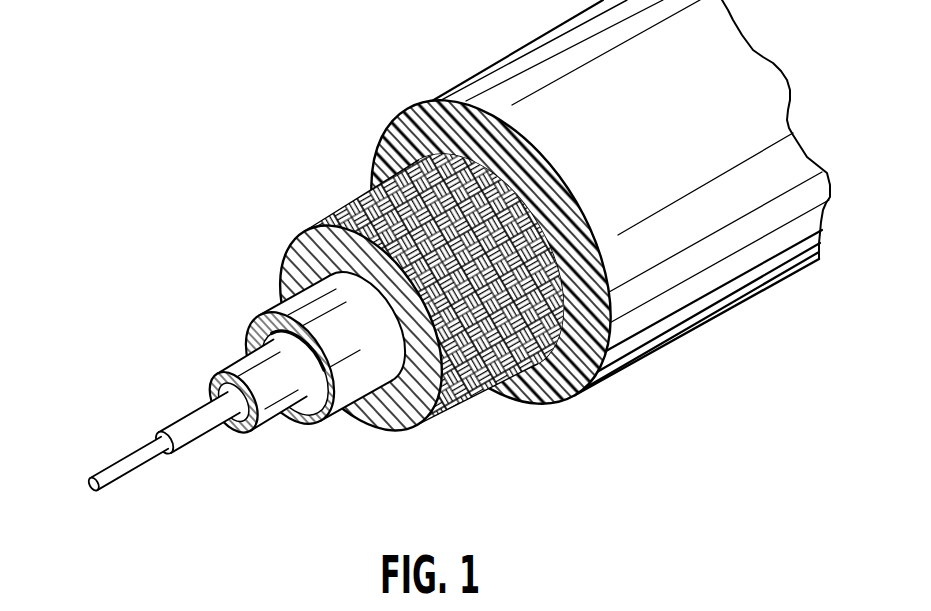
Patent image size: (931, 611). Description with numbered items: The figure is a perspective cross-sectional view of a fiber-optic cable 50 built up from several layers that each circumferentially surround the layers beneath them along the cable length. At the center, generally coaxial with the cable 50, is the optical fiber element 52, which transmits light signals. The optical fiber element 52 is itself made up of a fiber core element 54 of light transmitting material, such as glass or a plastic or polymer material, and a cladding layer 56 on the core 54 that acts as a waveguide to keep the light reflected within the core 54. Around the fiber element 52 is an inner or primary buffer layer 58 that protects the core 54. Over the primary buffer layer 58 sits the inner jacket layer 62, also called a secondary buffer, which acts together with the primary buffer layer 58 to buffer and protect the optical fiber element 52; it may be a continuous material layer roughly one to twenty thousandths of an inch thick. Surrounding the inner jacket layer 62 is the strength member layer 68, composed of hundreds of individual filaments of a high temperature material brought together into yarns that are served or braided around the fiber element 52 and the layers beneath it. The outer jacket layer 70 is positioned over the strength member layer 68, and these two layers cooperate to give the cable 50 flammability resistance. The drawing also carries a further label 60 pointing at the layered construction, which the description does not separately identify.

The fiber-optic cable 50 is at (438, 261).
The optical fiber element 52 is at (143, 424).
The fiber core element 54 is at (124, 458).
The cladding layer 56 is at (187, 415).
The primary buffer layer 58 is at (232, 362).
The dielectric layer 60 is at (315, 485).
The inner jacket layer 62 is at (271, 305).
The strength member layer 68 is at (348, 210).
The outer jacket layer 70 is at (450, 87).